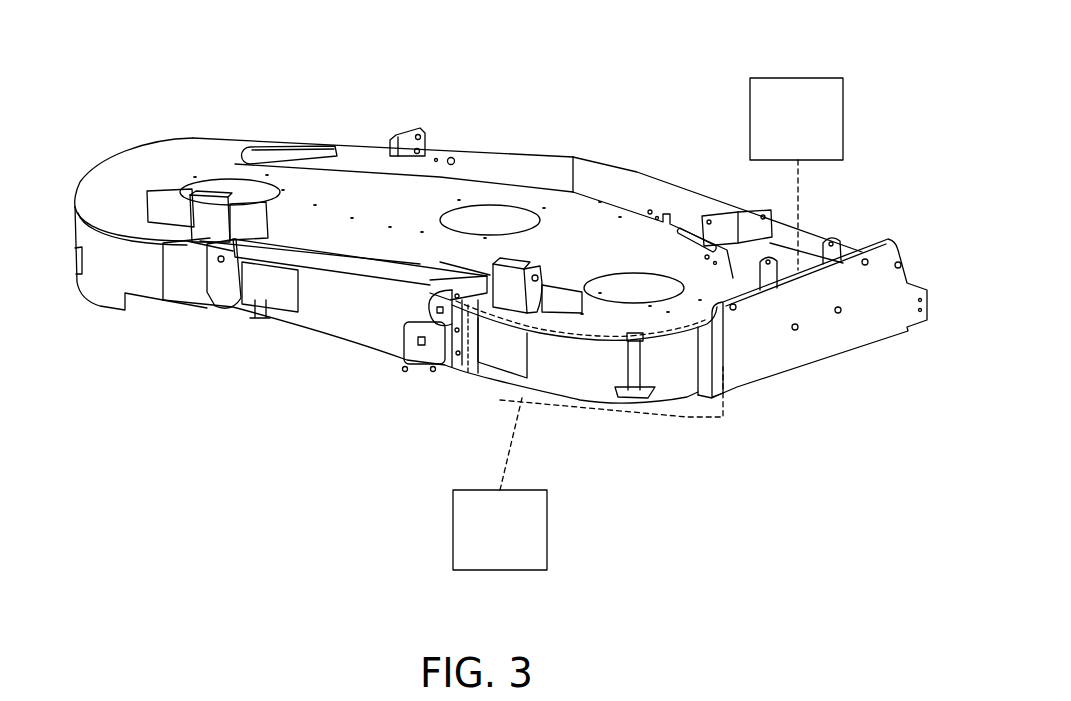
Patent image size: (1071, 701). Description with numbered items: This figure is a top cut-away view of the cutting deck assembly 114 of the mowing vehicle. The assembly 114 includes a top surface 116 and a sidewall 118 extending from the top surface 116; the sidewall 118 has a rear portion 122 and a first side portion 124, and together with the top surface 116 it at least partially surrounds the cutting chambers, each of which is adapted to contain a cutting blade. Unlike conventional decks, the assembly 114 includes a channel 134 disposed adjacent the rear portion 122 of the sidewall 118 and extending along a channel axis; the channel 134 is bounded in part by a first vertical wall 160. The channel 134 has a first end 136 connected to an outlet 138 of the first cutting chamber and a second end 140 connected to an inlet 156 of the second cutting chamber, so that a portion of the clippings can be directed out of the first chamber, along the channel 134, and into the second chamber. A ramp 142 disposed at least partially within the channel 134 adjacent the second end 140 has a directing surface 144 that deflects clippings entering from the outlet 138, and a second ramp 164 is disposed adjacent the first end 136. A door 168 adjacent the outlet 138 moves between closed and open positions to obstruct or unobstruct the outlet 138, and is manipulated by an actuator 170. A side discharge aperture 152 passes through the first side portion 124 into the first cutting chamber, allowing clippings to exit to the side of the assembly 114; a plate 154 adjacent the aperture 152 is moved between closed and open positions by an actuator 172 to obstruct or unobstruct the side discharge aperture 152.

The cutting deck assembly 114 is at (678, 44).
The top surface 116 is at (160, 168).
The sidewall 118 is at (72, 240).
The rear portion 122 is at (96, 258).
The first side portion 124 is at (700, 393).
The channel 134 is at (263, 330).
The first end 136 is at (457, 290).
The outlet 138 is at (549, 280).
The second end 140 is at (215, 268).
The ramp 142 is at (255, 318).
The directing surface 144 is at (338, 263).
The side discharge aperture 152 is at (733, 378).
The plate 154 is at (847, 333).
The inlet 156 is at (283, 295).
The first vertical wall 160 is at (387, 287).
The second ramp 164 is at (405, 363).
The door 168 is at (480, 384).
The actuator 170 is at (547, 530).
The actuator 172 is at (847, 117).